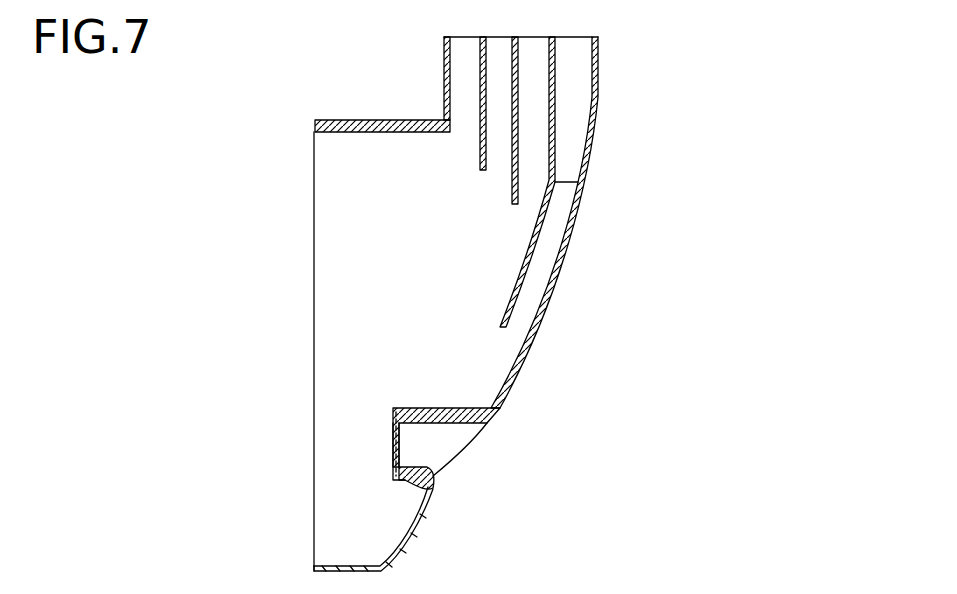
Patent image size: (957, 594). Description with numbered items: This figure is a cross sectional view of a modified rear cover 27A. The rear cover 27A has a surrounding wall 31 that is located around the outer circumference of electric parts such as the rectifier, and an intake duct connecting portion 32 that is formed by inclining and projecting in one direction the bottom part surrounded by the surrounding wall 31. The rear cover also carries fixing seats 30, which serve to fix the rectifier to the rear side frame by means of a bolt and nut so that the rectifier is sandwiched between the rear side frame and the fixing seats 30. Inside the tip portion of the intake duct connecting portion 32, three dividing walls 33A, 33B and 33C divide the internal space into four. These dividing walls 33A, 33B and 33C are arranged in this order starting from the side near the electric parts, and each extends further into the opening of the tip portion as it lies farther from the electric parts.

The rear cover 27A is at (609, 76).
The fixing seat 30 is at (399, 463).
The surrounding wall 31 is at (355, 120).
The intake duct connecting portion 32 is at (444, 67).
The dividing wall 33A is at (486, 98).
The dividing wall 33B is at (518, 135).
The dividing wall 33C is at (556, 182).